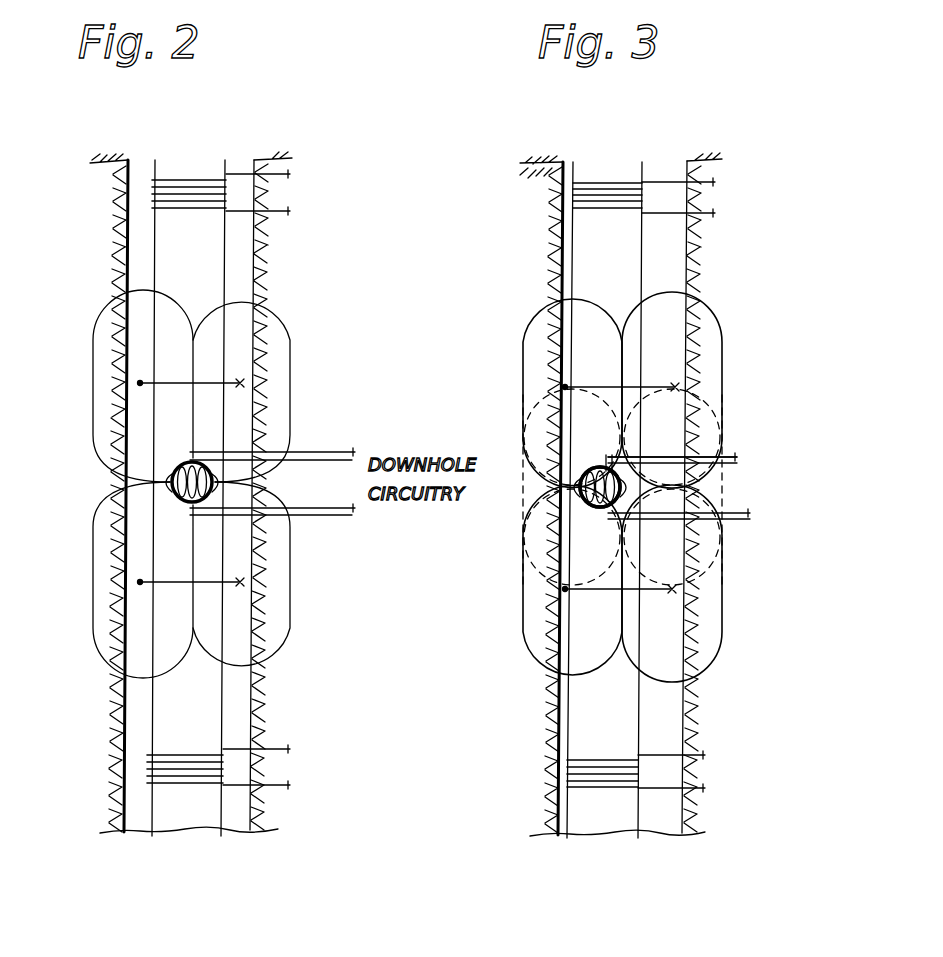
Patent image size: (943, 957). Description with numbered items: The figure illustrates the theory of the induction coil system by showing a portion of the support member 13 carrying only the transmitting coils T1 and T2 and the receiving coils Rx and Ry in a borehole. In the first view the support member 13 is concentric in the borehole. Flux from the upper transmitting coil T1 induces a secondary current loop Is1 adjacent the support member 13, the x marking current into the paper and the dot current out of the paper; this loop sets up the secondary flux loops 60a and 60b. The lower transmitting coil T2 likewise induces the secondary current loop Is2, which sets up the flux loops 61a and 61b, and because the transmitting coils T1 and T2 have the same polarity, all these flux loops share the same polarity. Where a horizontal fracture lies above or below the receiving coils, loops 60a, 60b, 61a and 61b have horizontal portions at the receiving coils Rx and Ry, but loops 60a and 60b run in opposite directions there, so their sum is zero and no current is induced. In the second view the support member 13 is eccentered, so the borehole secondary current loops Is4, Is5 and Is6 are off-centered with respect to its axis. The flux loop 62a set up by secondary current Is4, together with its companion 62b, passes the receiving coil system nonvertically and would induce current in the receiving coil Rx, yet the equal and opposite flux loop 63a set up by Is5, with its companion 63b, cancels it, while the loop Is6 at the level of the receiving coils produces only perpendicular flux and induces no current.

In FIG. 2, the support member 13 is at (218, 232).
In FIG. 3, the support member 13 is at (628, 236).
In FIG. 2, the transmitting coil T1 is at (140, 184).
In FIG. 3, the transmitting coil T1 is at (705, 190).
In FIG. 2, the transmitting coil T2 is at (140, 768).
In FIG. 3, the transmitting coil T2 is at (702, 781).
In FIG. 2, the secondary flux loop 60a is at (282, 302).
In FIG. 2, the secondary flux loop 60b is at (106, 300).
In FIG. 2, the secondary flux loop 61a is at (280, 663).
In FIG. 2, the secondary flux loop 61b is at (104, 666).
In FIG. 3, the secondary flux loop 62a is at (536, 300).
In FIG. 3, the secondary flux loop 62b is at (714, 305).
In FIG. 3, the secondary flux loop 63a is at (536, 666).
In FIG. 3, the secondary flux loop 63b is at (720, 665).
In FIG. 2, the secondary current loop Is1 is at (237, 380).
In FIG. 2, the secondary current loop Is2 is at (237, 587).
In FIG. 3, the secondary current loop Is4 is at (669, 383).
In FIG. 3, the secondary current loop Is5 is at (668, 592).
In FIG. 3, the secondary current loop Is6 is at (656, 500).
In FIG. 3, the receiving coil Rx is at (597, 510).
In FIG. 3, the receiving coil Ry is at (598, 468).